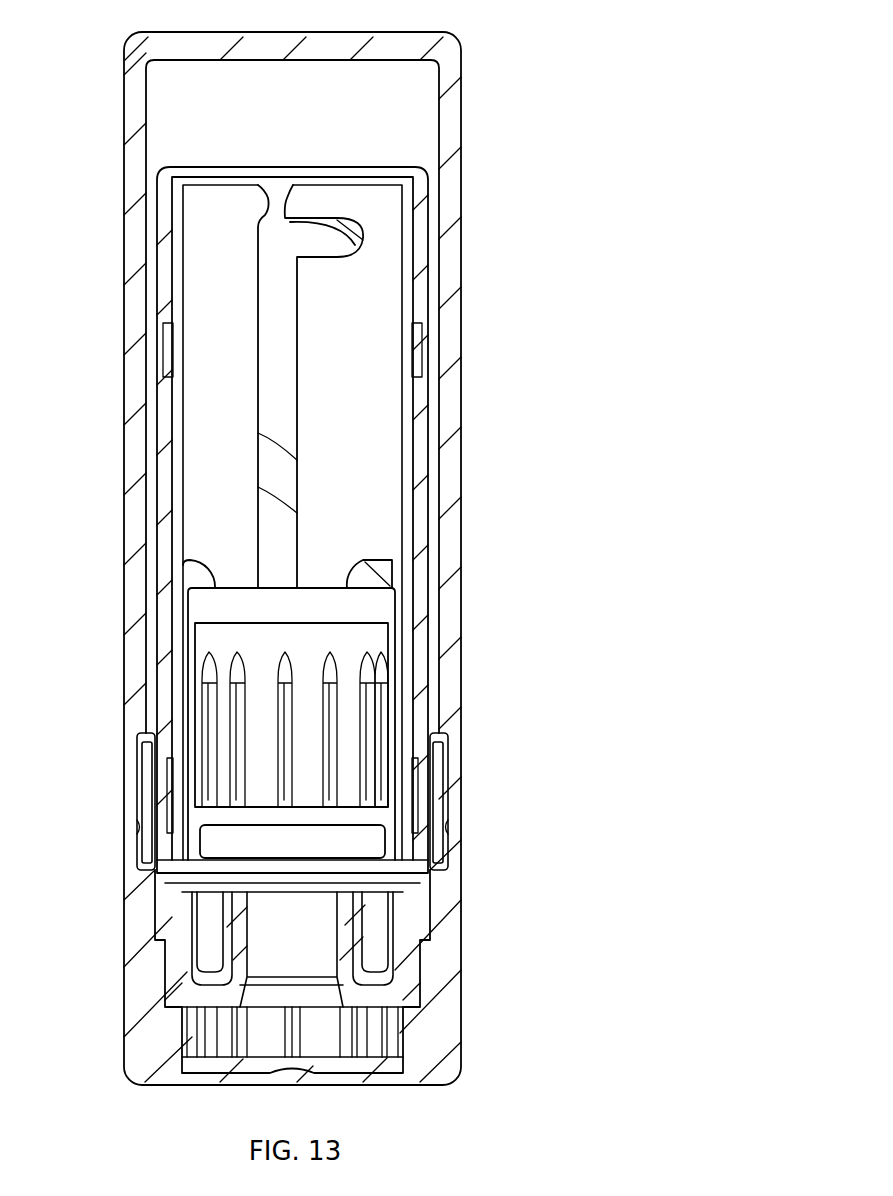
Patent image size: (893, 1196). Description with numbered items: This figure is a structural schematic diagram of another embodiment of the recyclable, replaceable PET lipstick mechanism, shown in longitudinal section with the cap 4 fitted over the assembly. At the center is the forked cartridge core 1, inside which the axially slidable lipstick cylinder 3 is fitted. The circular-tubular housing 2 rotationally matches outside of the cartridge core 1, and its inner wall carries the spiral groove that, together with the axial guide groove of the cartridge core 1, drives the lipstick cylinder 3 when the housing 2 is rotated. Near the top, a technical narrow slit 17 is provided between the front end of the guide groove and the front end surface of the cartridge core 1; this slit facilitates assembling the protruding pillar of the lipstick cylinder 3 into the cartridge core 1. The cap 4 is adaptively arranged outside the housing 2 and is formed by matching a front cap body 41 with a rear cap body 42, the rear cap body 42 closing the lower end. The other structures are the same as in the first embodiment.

The cartridge core 1 is at (403, 450).
The housing 2 is at (420, 280).
The lipstick cylinder 3 is at (357, 607).
The cap 4 is at (453, 112).
The narrow slit 17 is at (287, 200).
The front cap body 41 is at (452, 672).
The rear cap body 42 is at (443, 932).